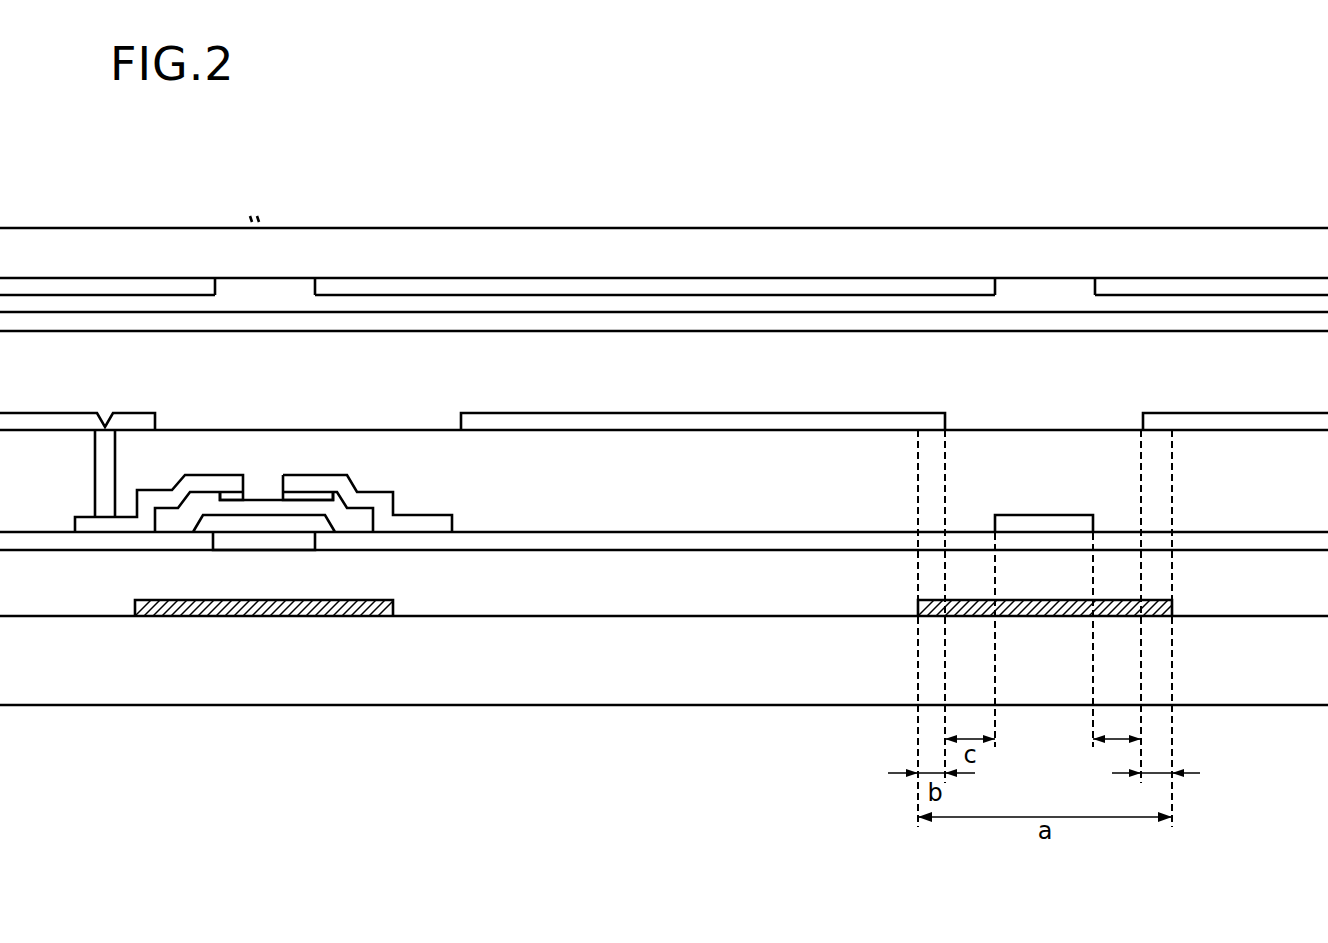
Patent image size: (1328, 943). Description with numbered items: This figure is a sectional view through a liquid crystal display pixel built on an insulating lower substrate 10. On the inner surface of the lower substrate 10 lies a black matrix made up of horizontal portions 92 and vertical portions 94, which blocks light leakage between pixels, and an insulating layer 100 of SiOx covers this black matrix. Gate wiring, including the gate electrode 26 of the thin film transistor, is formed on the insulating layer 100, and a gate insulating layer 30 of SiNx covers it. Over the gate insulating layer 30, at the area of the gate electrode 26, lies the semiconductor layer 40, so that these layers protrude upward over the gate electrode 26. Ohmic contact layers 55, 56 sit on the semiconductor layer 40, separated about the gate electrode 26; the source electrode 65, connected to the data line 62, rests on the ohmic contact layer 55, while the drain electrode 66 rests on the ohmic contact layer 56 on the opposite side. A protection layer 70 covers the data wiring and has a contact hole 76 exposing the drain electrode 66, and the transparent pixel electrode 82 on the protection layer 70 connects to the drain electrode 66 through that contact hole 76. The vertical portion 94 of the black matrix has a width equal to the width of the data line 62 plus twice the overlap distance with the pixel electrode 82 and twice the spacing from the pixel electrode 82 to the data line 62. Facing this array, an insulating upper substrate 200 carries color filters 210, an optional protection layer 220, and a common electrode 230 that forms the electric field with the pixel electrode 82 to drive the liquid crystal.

The insulating lower substrate 10 is at (393, 687).
The gate electrode 26 is at (262, 540).
The gate insulating layer 30 is at (500, 543).
The semiconductor layer 40 is at (265, 508).
The ohmic contact layer 55 is at (318, 497).
The ohmic contact layer 56 is at (220, 497).
The data line 62 is at (1015, 523).
The source electrode 65 is at (368, 500).
The drain electrode 66 is at (160, 498).
The protection layer 70 is at (587, 440).
The contact hole 76 is at (105, 419).
The pixel electrode 82 is at (37, 426).
The horizontal portion of black matrix 92 is at (187, 608).
The vertical portion of black matrix 94 is at (1075, 608).
The insulating layer 100 is at (667, 610).
The insulating upper substrate 200 is at (452, 236).
The color filter 210 is at (707, 286).
The protection layer 220 is at (1045, 287).
The common electrode 230 is at (540, 322).